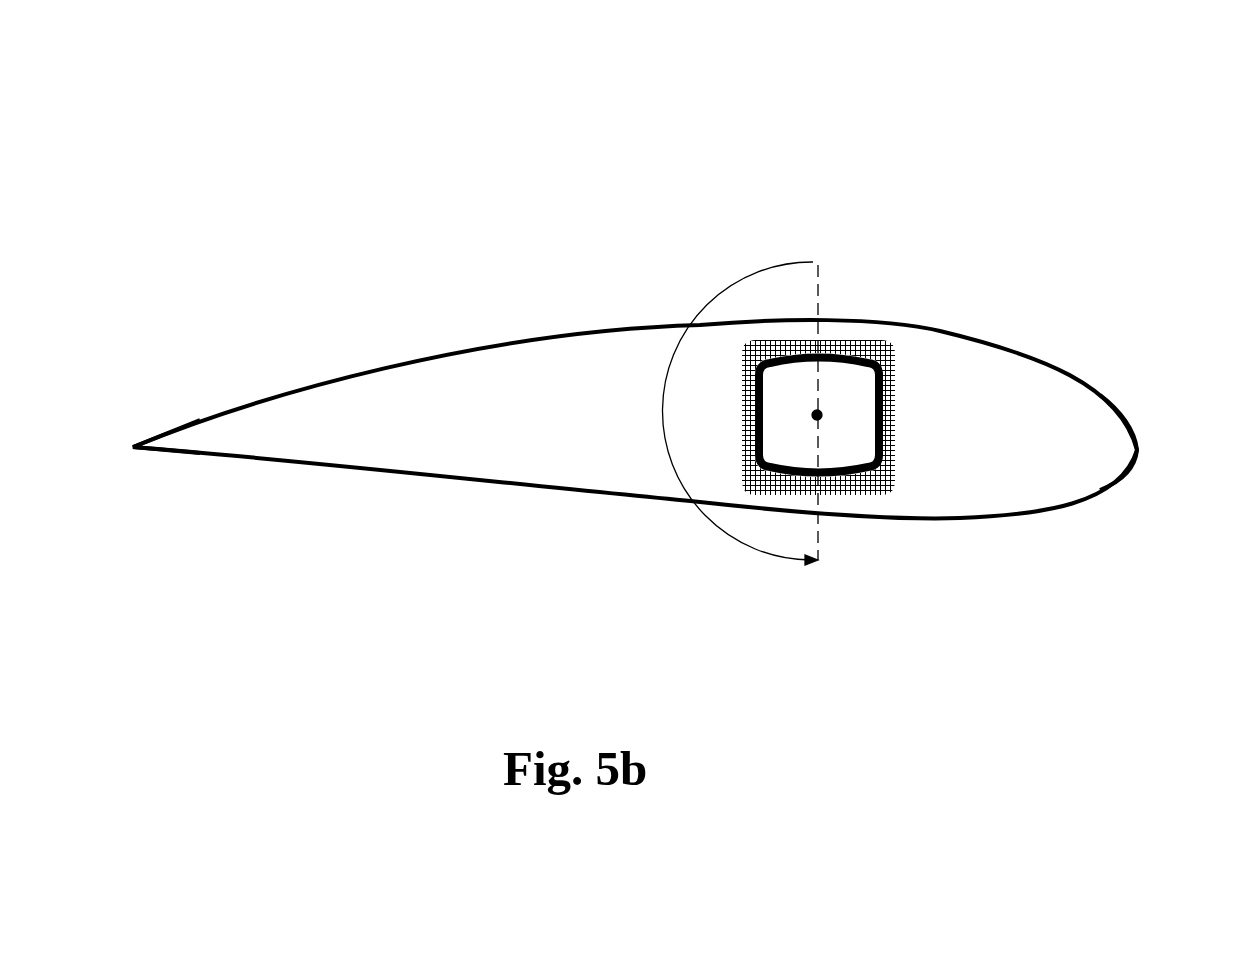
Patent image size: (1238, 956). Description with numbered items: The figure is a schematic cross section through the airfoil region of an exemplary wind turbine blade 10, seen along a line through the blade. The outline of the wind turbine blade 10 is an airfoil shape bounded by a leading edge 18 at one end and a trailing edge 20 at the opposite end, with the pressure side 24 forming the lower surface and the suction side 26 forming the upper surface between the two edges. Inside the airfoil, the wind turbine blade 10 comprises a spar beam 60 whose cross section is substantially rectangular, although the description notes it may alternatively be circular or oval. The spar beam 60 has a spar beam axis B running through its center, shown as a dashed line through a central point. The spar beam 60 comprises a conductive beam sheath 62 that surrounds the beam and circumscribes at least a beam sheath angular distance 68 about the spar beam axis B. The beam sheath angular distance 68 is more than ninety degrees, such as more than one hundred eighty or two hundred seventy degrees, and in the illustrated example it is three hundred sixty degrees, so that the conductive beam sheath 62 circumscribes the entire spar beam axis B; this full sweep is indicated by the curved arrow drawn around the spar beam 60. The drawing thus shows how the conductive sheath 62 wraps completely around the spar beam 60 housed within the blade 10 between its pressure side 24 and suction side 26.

The wind turbine blade 10 is at (654, 368).
The leading edge 18 is at (1137, 452).
The trailing edge 20 is at (132, 447).
The pressure side 24 is at (1007, 517).
The suction side 26 is at (1008, 348).
The spar beam 60 is at (837, 370).
The conductive beam sheath 62 is at (890, 377).
The beam sheath angular distance 68 is at (700, 325).
The spar beam axis B is at (817, 415).